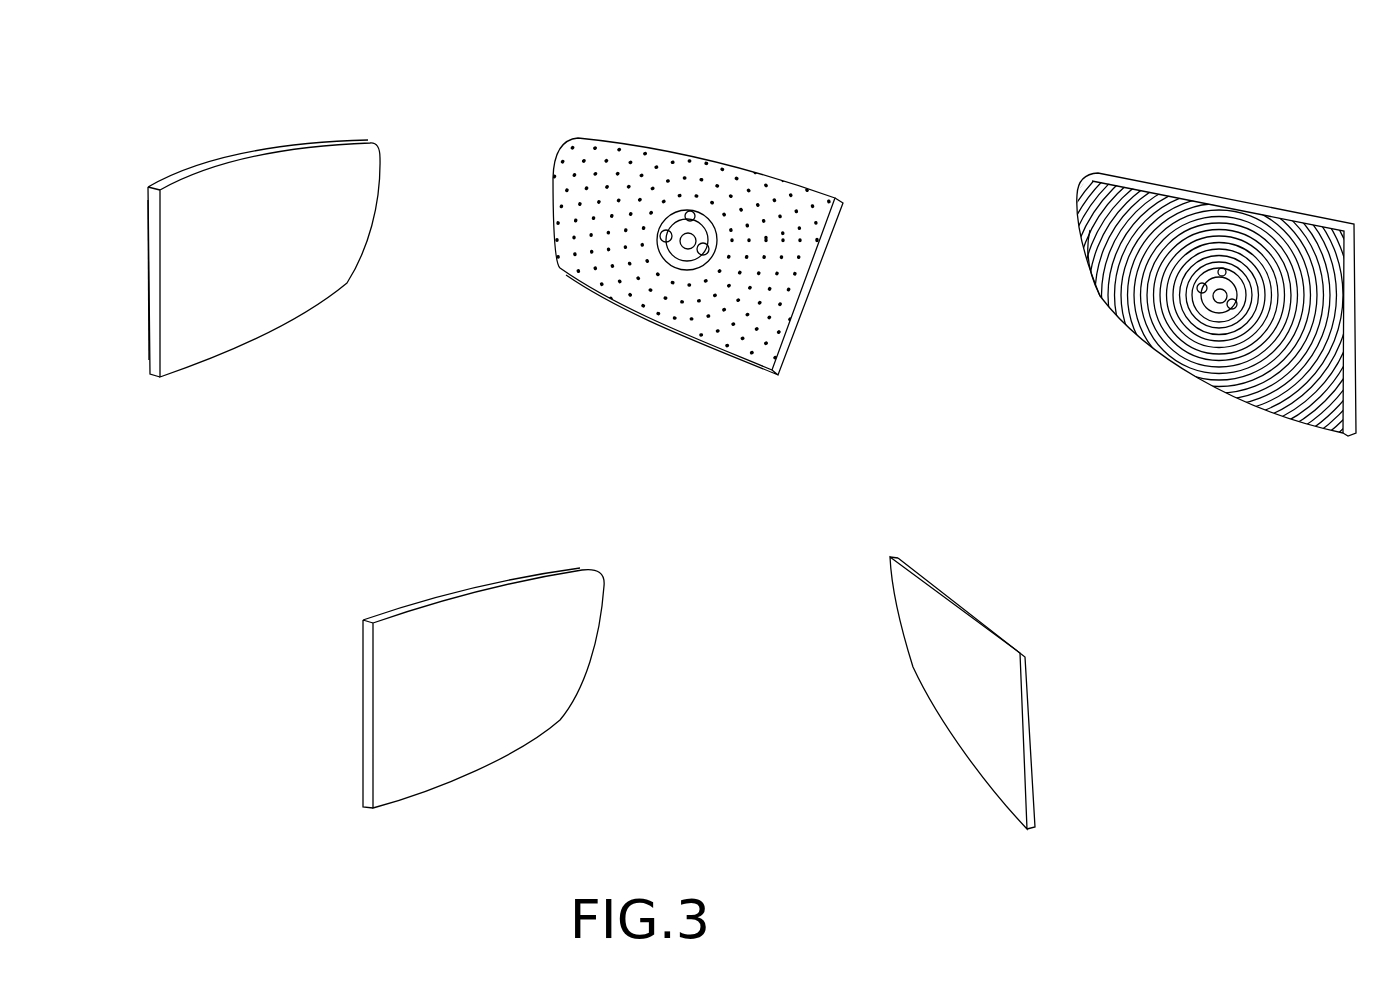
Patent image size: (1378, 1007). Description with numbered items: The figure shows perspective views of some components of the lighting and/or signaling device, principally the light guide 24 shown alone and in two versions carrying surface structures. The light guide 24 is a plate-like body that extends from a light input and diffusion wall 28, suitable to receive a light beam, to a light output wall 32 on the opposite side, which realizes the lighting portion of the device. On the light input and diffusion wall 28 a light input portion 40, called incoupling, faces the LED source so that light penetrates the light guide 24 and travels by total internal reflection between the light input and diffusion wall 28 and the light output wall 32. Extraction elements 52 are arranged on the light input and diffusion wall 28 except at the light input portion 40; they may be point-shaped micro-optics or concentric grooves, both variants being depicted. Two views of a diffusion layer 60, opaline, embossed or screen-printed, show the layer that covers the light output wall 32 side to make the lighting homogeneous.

The light guide 24 is at (330, 140).
The light input and diffusion wall 28 is at (148, 257).
The light output wall 32 is at (258, 290).
The light input portion 40 is at (712, 217).
The extraction elements 52 is at (760, 288).
The diffusion layer 60 is at (405, 688).